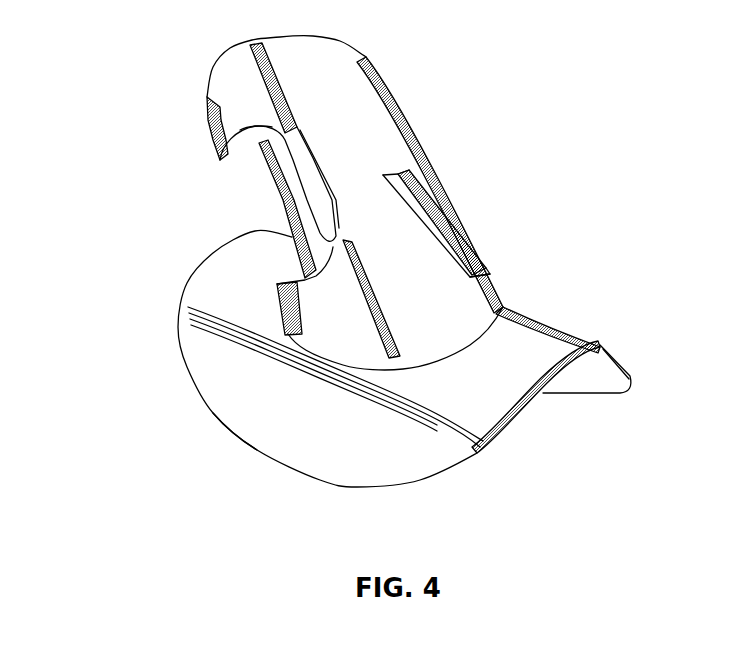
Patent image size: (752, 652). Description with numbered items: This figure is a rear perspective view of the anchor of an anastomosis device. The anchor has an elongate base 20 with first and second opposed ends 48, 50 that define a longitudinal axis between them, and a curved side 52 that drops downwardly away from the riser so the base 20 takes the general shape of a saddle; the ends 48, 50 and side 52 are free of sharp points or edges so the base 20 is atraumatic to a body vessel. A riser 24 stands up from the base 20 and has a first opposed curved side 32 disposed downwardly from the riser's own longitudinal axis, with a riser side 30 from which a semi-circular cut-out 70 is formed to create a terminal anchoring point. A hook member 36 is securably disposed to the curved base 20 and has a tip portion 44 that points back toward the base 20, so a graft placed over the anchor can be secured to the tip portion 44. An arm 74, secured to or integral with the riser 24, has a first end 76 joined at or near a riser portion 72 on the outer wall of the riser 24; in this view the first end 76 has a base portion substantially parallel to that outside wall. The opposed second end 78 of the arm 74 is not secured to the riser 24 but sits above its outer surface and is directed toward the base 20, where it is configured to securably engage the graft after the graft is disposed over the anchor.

The base 20 is at (523, 345).
The riser 24 is at (381, 70).
The riser side 30 is at (220, 160).
The first opposed curved side 32 is at (240, 90).
The hook member 36 is at (290, 212).
The tip portion 44 is at (260, 160).
The first opposed end 48 is at (193, 272).
The second opposed end 50 is at (600, 345).
The curved side 52 is at (298, 437).
The cut-out 70 is at (252, 140).
The riser portion 72 is at (397, 163).
The arm 74 is at (443, 233).
The first end 76 is at (407, 183).
The second end 78 is at (480, 261).